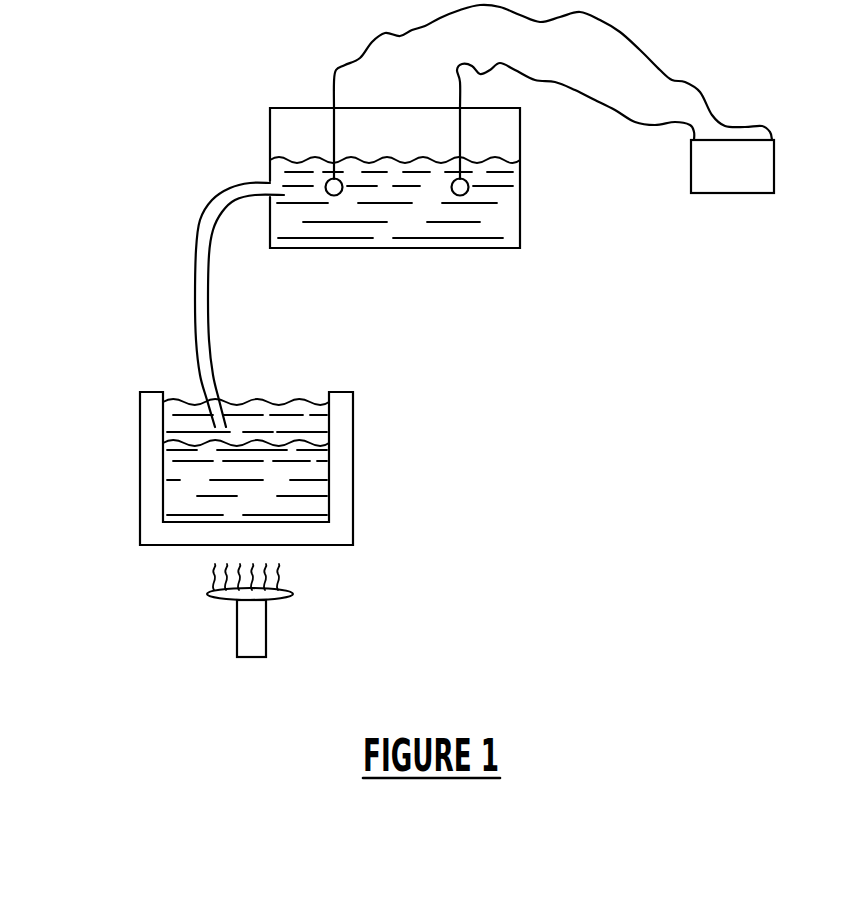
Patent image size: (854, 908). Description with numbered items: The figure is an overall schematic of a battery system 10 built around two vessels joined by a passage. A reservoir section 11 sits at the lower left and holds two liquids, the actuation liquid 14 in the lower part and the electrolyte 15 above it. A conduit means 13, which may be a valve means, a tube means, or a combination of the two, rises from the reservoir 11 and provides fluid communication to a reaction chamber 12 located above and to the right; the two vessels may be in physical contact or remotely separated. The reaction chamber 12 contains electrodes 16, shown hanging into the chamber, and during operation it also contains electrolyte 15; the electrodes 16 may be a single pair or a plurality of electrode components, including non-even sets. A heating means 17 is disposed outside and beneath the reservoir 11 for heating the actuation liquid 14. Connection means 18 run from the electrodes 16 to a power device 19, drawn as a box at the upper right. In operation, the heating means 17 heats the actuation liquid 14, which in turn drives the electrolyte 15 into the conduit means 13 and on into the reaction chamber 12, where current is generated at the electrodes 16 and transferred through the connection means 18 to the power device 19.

The system 10 is at (499, 405).
The reservoir section 11 is at (347, 511).
The reaction chamber 12 is at (524, 132).
The conduit means 13 is at (192, 231).
The actuation liquid 14 is at (193, 500).
The electrolyte 15 is at (430, 217).
The electrodes 16 is at (339, 101).
The heating means 17 is at (272, 634).
The connection means 18 is at (689, 120).
The power device 19 is at (744, 182).